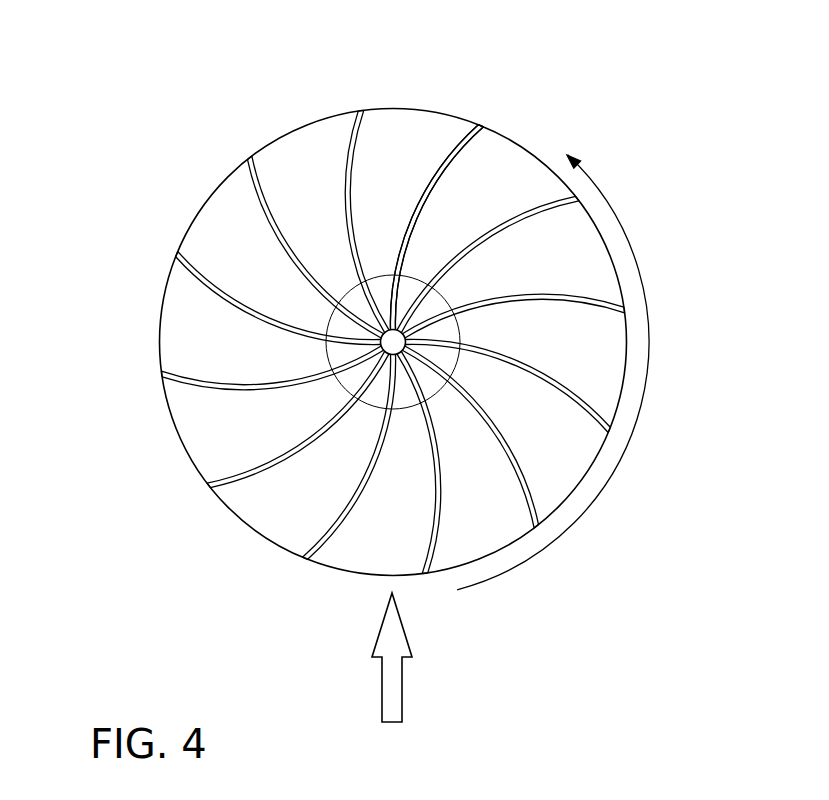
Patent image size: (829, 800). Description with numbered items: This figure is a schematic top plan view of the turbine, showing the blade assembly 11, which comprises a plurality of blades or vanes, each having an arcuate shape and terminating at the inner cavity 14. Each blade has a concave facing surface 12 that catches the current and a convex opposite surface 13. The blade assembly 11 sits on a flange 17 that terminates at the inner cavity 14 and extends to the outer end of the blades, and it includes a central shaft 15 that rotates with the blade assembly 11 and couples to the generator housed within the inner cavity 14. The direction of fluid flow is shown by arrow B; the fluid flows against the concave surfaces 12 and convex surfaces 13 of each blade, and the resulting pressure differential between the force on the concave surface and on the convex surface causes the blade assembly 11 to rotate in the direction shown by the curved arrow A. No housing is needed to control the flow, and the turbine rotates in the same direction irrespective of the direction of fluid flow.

The blade assembly 11 is at (477, 138).
The concave facing surface 12 is at (437, 187).
The convex opposite surface 13 is at (450, 157).
The inner cavity 14 is at (350, 287).
The central shaft 15 is at (258, 432).
The flange 17 is at (193, 333).
The curved arrow A is at (635, 430).
The arrow B is at (402, 688).